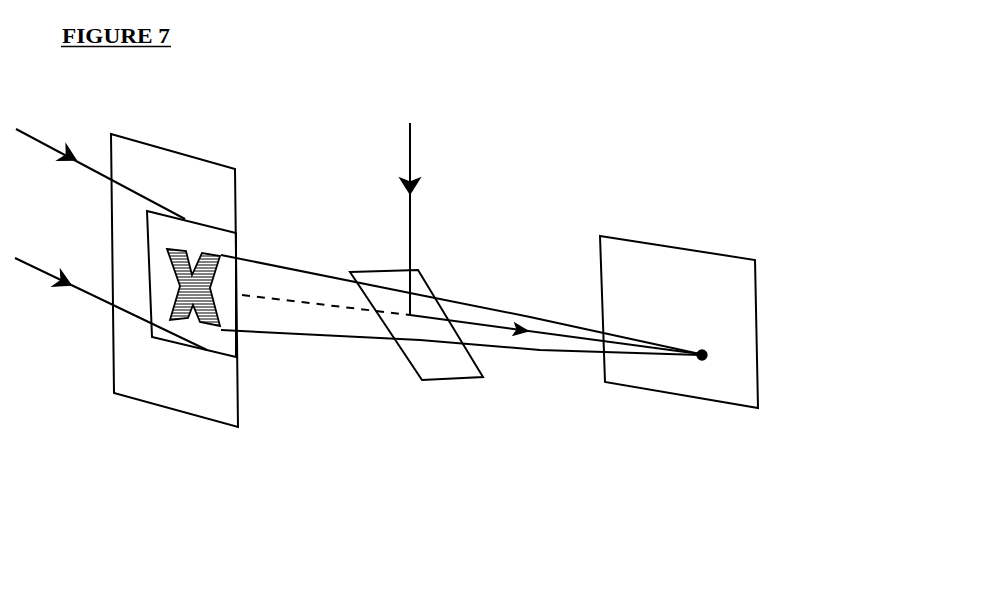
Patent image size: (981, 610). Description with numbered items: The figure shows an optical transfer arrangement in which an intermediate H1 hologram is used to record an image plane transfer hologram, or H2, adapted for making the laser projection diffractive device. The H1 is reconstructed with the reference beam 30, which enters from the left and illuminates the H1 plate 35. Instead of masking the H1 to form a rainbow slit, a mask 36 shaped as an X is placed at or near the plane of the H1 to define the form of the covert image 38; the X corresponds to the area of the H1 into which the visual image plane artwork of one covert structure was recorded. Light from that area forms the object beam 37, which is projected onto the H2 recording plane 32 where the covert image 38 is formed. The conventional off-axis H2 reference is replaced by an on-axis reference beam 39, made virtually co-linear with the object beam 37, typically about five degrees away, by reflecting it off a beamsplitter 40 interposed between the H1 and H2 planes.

The reference beam 30 is at (106, 239).
The H2 recording plane 32 is at (702, 322).
The aperture plate 35 is at (168, 267).
The mask 36 is at (186, 324).
The object beam 37 is at (507, 372).
The covert image 38 is at (702, 355).
The on-axis reference beam 39 is at (565, 388).
The beamsplitter 40 is at (414, 374).